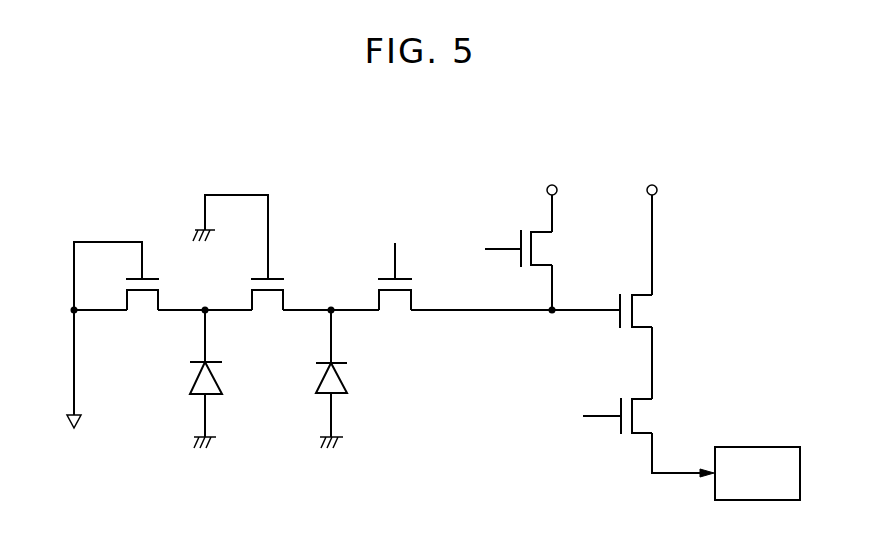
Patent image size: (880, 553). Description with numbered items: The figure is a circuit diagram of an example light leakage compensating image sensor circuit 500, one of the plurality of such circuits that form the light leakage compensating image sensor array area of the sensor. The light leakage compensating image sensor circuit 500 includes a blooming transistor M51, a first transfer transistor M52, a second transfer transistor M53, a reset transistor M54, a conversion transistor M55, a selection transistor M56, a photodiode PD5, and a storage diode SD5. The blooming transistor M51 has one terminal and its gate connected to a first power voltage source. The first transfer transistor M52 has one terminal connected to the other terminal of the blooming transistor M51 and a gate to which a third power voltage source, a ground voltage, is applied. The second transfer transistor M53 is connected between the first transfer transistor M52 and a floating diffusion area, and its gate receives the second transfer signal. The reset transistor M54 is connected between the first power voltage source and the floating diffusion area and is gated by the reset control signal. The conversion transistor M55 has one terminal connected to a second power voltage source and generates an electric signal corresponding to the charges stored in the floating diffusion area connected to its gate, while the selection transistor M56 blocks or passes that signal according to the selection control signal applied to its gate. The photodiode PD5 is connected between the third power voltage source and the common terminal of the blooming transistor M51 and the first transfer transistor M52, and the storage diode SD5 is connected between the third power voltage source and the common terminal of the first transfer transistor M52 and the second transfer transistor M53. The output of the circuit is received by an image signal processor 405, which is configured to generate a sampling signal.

The light leakage compensating image sensor circuit 500 is at (720, 191).
The image signal processor (ISP) 405 is at (758, 446).
The blooming transistor M51 is at (119, 291).
The first transfer transistor M52 is at (247, 267).
The second transfer transistor M53 is at (395, 292).
The reset transistor M54 is at (540, 248).
The conversion transistor M55 is at (659, 311).
The selection transistor M56 is at (640, 416).
The photodiode PD5 is at (229, 379).
The storage diode SD5 is at (356, 379).